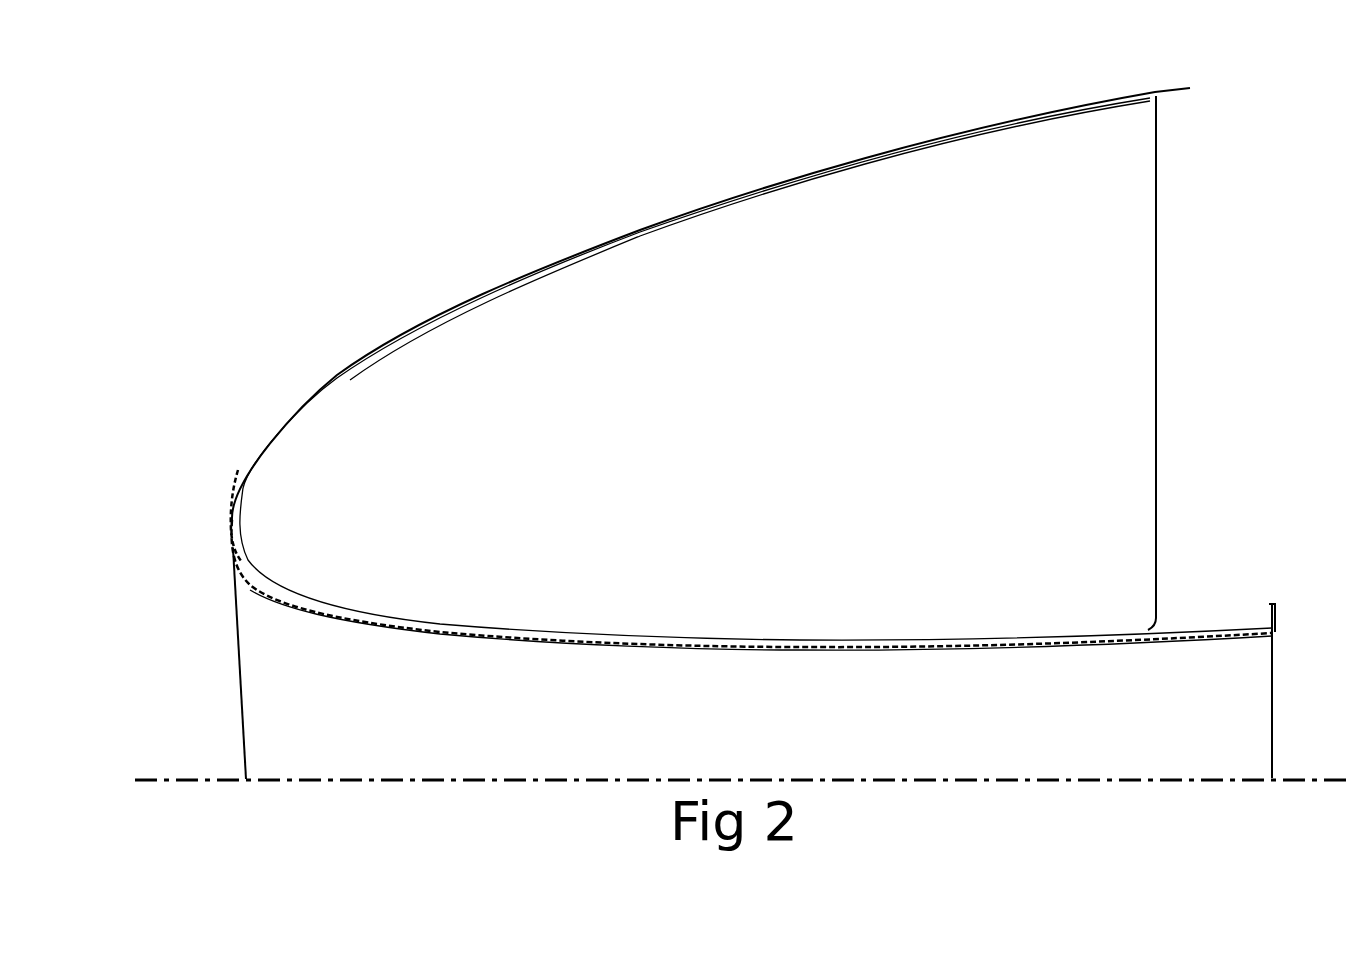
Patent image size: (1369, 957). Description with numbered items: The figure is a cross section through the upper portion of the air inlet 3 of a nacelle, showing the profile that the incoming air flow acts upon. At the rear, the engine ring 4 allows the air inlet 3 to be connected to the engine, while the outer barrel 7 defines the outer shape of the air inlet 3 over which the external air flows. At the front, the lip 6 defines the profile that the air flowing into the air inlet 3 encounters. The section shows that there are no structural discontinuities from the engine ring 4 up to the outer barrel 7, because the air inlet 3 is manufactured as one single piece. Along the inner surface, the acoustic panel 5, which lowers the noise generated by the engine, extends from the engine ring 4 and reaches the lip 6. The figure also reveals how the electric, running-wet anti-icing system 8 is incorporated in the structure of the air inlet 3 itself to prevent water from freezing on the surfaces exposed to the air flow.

The air inlet 3 is at (448, 128).
The engine ring 4 is at (1232, 600).
The acoustic panel 5 is at (831, 600).
The lip 6 is at (218, 560).
The outer barrel 7 is at (813, 173).
The anti-icing system 8 is at (471, 646).